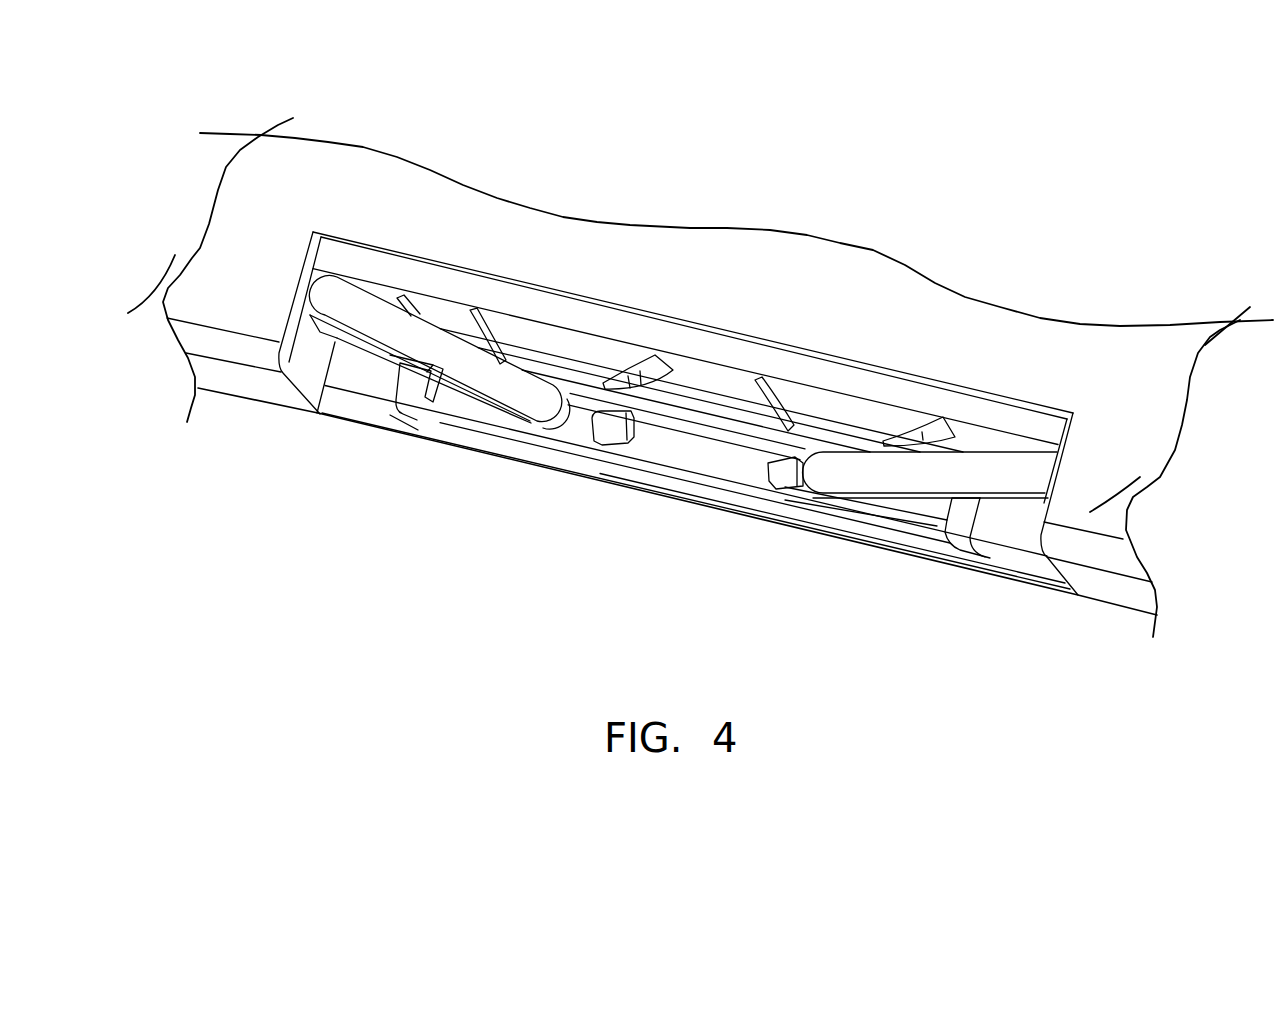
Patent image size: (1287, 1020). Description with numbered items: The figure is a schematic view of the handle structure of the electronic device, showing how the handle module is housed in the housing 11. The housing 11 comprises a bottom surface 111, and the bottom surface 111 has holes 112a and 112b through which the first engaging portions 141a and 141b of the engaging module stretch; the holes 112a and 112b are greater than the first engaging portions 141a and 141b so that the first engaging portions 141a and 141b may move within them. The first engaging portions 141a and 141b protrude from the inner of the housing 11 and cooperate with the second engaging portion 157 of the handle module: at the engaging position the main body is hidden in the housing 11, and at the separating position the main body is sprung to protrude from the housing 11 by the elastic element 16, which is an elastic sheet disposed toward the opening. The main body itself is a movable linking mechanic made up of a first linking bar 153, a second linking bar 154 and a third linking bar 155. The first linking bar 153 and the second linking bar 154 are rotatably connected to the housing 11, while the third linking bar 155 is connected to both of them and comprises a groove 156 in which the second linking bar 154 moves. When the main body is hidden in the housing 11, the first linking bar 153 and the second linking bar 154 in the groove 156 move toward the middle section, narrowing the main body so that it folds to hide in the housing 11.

The housing 11 is at (1033, 330).
The bottom surface 111 is at (1005, 557).
The hole 112a is at (643, 440).
The hole 112b is at (765, 485).
The first engaging portion 141a is at (608, 430).
The first engaging portion 141b is at (785, 480).
The first linking bar 153 is at (460, 370).
The second linking bar 154 is at (1010, 480).
The third linking bar 155 is at (925, 533).
The groove 156 is at (693, 455).
The second engaging portion 157 is at (727, 440).
The elastic element 16 is at (652, 357).